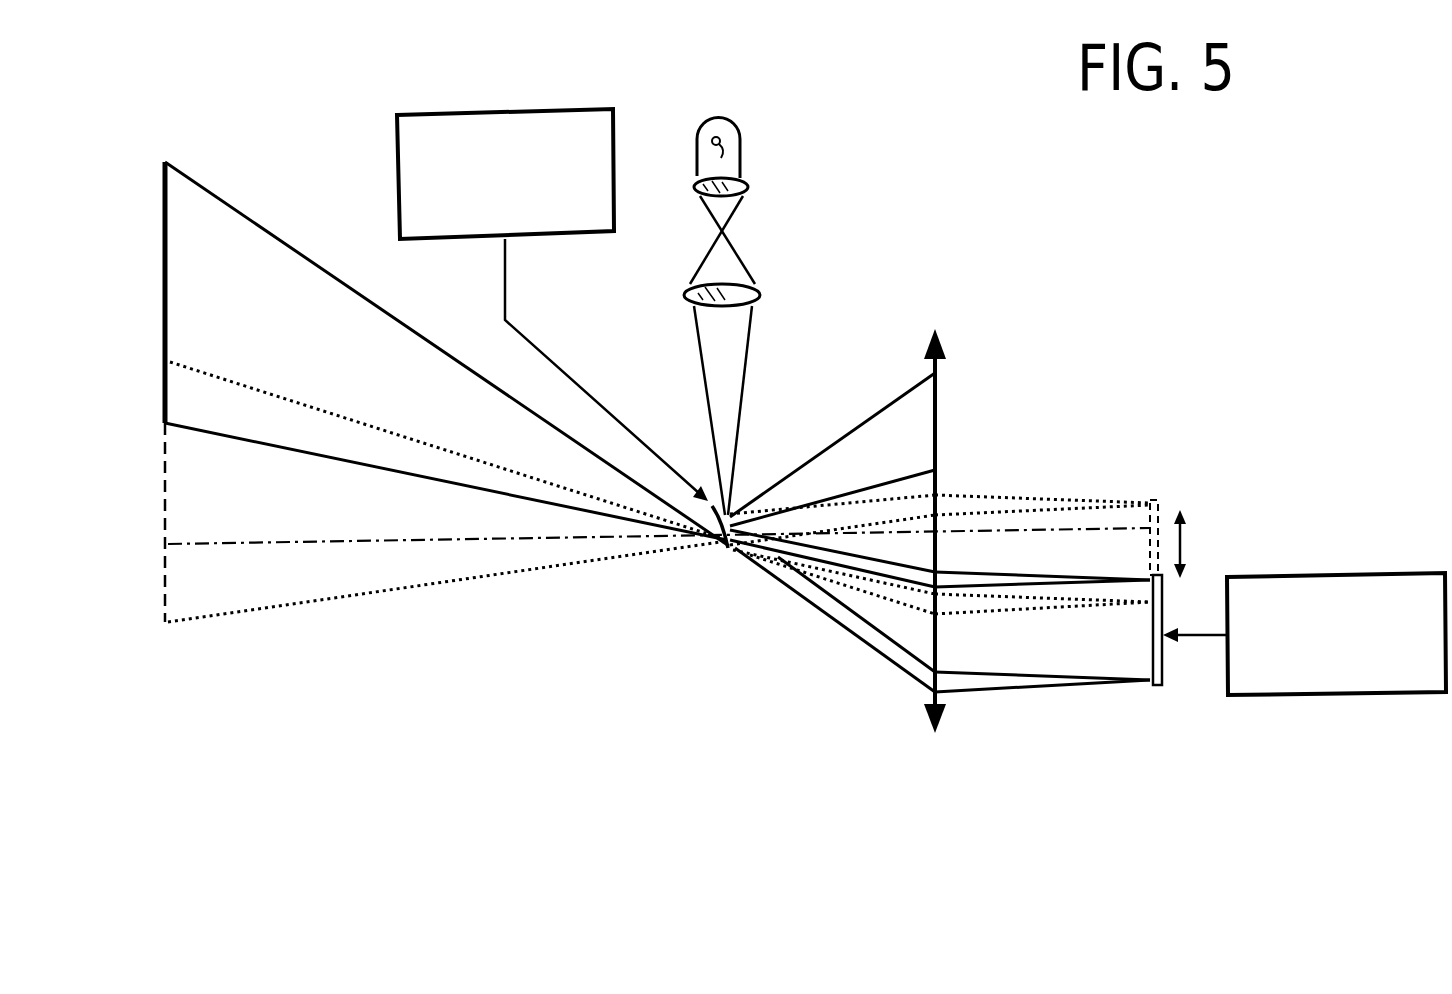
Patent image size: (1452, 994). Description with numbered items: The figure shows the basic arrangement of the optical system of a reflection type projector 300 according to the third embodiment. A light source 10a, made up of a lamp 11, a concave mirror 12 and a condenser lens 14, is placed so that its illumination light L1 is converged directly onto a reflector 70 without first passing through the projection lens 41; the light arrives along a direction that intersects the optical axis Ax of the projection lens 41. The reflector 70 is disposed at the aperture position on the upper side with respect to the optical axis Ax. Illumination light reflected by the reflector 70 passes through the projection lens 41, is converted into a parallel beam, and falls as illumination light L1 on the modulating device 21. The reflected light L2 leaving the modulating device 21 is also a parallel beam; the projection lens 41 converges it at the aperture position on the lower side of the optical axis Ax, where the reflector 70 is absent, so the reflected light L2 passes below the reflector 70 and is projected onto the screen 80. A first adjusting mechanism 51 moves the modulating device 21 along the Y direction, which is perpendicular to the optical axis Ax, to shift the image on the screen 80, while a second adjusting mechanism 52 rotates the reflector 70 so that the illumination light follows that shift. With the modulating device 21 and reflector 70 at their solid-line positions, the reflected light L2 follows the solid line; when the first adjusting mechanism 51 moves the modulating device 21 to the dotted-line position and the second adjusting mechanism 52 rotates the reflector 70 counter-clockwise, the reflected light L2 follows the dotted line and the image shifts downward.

The screen 80 is at (165, 274).
The optical axis Ax is at (473, 537).
The second adjusting mechanism 52 is at (533, 110).
The light source 10a is at (745, 285).
The concave mirror 12 is at (720, 114).
The lamp 11 is at (697, 152).
The condenser lens 14 is at (753, 288).
The reflector 70 is at (713, 540).
The reflection type projector 300 is at (889, 264).
The projection lens 41 is at (930, 700).
The illumination light L1 is at (977, 690).
The reflected light L2 is at (1063, 677).
The modulating device 21 is at (1160, 688).
The Y direction Y is at (1194, 544).
The first adjusting mechanism 51 is at (1387, 572).